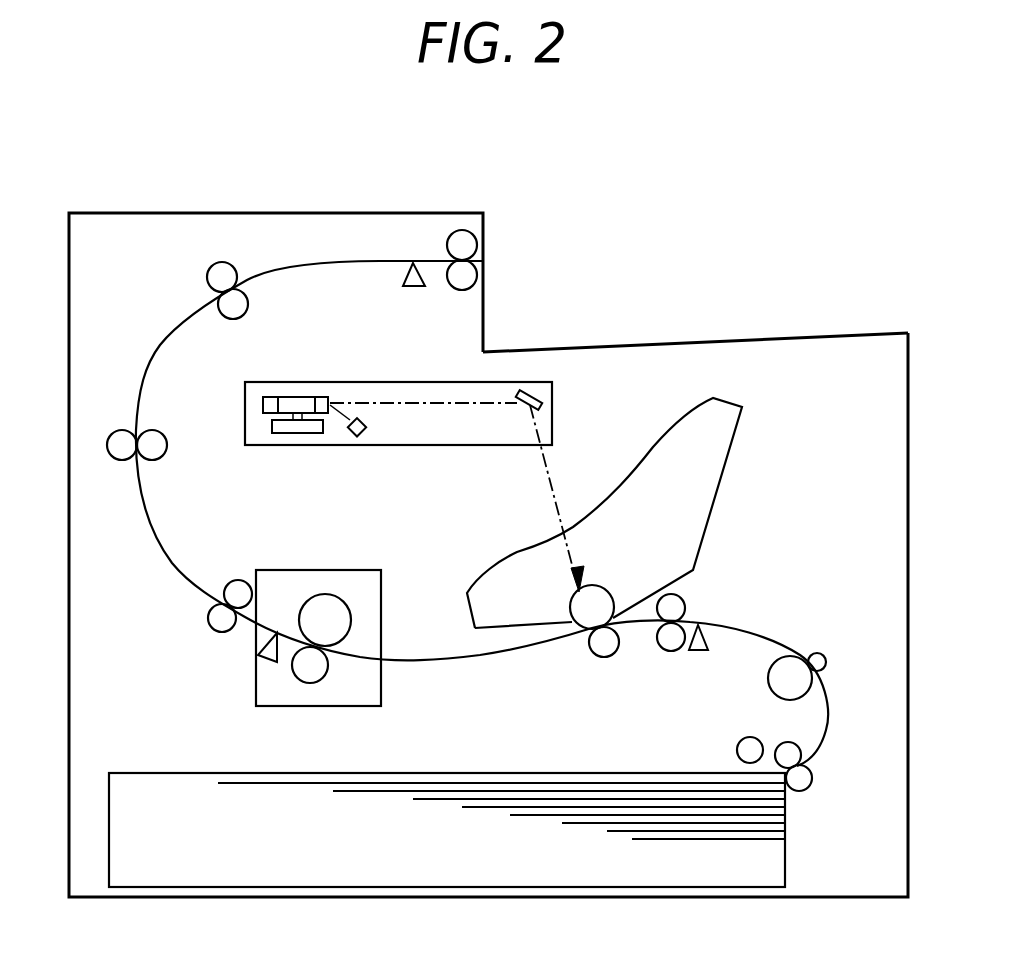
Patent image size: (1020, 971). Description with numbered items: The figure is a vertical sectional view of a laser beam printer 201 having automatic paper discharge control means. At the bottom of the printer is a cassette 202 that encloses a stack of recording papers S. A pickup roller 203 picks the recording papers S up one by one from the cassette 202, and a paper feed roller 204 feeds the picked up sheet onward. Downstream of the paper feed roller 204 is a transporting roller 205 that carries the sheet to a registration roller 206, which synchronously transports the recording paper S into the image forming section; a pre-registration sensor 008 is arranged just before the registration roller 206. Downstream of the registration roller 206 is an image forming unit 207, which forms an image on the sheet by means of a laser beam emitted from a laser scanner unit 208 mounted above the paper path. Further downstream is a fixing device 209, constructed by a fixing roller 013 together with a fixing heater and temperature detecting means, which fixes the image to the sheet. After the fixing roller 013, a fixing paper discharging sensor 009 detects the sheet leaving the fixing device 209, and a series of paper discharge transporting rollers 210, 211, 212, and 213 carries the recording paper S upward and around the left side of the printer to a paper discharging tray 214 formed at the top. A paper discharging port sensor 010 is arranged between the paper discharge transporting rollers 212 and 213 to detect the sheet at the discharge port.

The laser beam printer 201 is at (323, 212).
The cassette 202 is at (485, 871).
The pickup roller 203 is at (737, 750).
The paper feed roller 204 is at (810, 785).
The transporting roller 205 is at (828, 707).
The registration roller 206 is at (685, 593).
The image forming unit 207 is at (580, 645).
The laser scanner unit 208 is at (422, 447).
The fixing device 209 is at (349, 607).
The paper discharge transporting roller 210 is at (232, 580).
The paper discharge transporting roller 211 is at (158, 430).
The paper discharge transporting roller 212 is at (207, 281).
The paper discharge transporting roller 213 is at (455, 287).
The paper discharging tray 214 is at (583, 316).
The fixing roller 013 is at (352, 618).
The pre-registration sensor 008 is at (698, 655).
The fixing paper discharging sensor 009 is at (263, 657).
The paper discharging port sensor 010 is at (402, 277).
The recording paper S is at (575, 877).